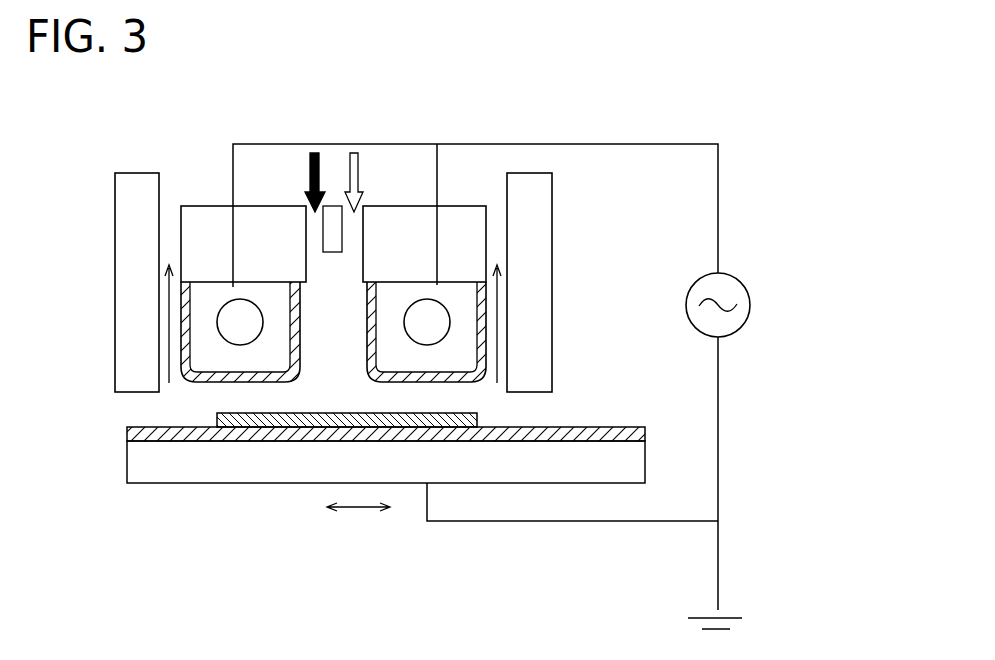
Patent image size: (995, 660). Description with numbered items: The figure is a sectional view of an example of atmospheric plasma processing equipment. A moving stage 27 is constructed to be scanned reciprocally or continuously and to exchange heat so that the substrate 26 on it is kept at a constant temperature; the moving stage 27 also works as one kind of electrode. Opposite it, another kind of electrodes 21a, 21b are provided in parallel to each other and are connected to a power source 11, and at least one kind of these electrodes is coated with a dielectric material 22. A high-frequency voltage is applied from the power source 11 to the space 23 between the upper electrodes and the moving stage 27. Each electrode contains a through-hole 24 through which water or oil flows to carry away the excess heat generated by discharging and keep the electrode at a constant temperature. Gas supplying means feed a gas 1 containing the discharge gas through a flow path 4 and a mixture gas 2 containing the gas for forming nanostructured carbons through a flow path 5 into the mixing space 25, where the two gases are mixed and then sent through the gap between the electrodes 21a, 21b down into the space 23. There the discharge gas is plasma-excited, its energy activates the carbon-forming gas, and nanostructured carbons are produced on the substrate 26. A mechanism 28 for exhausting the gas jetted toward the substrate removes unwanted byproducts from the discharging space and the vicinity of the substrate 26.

The gas 1 is at (317, 163).
The mixture gas 2 is at (362, 158).
The flow path 4 is at (312, 227).
The flow path 5 is at (352, 228).
The power source 11 is at (750, 303).
The electrode 21a is at (232, 354).
The electrode 21b is at (452, 360).
The dielectric material 22 is at (127, 432).
The space 23 is at (268, 400).
The through-hole 24 is at (440, 313).
The mixing space 25 is at (327, 312).
The substrate 26 is at (300, 427).
The moving stage 27 is at (588, 467).
The mechanism for exhausting the gas 28 is at (539, 216).